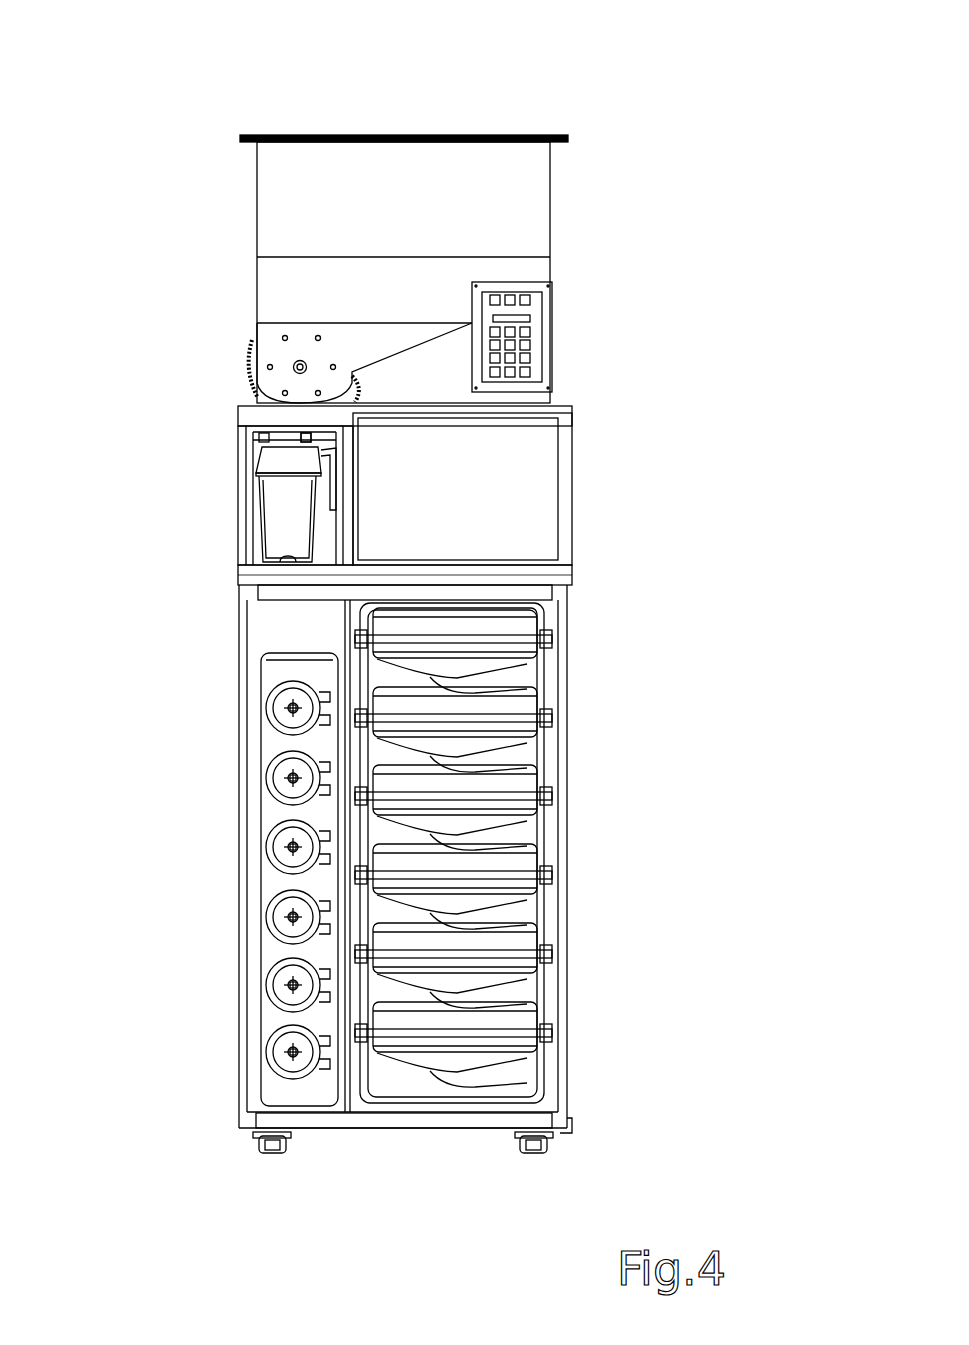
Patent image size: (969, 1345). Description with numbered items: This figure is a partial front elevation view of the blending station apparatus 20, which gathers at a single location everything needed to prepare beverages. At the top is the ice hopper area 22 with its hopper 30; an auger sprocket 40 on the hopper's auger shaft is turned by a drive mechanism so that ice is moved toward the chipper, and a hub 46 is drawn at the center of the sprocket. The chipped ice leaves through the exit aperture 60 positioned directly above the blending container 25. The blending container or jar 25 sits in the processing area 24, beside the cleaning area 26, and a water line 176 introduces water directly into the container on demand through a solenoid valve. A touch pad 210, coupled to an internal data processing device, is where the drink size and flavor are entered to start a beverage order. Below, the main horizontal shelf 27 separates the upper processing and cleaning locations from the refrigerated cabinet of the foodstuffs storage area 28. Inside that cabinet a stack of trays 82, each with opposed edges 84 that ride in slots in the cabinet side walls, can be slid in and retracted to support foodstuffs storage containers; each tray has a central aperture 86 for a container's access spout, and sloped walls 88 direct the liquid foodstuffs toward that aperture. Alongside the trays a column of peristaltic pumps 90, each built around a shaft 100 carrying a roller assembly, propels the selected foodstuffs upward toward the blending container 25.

The blending station apparatus 20 is at (157, 112).
The ice hopper area 22 is at (614, 180).
The processing area 24 is at (257, 530).
The blending container 25 is at (301, 514).
The cleaning area 26 is at (517, 446).
The main horizontal shelf 27 is at (488, 588).
The foodstuffs storage area 28 is at (555, 668).
The hopper 30 is at (431, 132).
The auger sprocket 40 is at (248, 368).
The drive hub 46 is at (301, 360).
The exit aperture 60 is at (311, 438).
The trays 82 is at (527, 690).
The opposed edges 84 is at (362, 606).
The central aperture 86 is at (527, 679).
The sloped walls 88 is at (527, 666).
The peristaltic pumps 90 is at (272, 716).
The shaft 100 is at (286, 706).
The water line 176 is at (253, 438).
The touch pad 210 is at (530, 329).